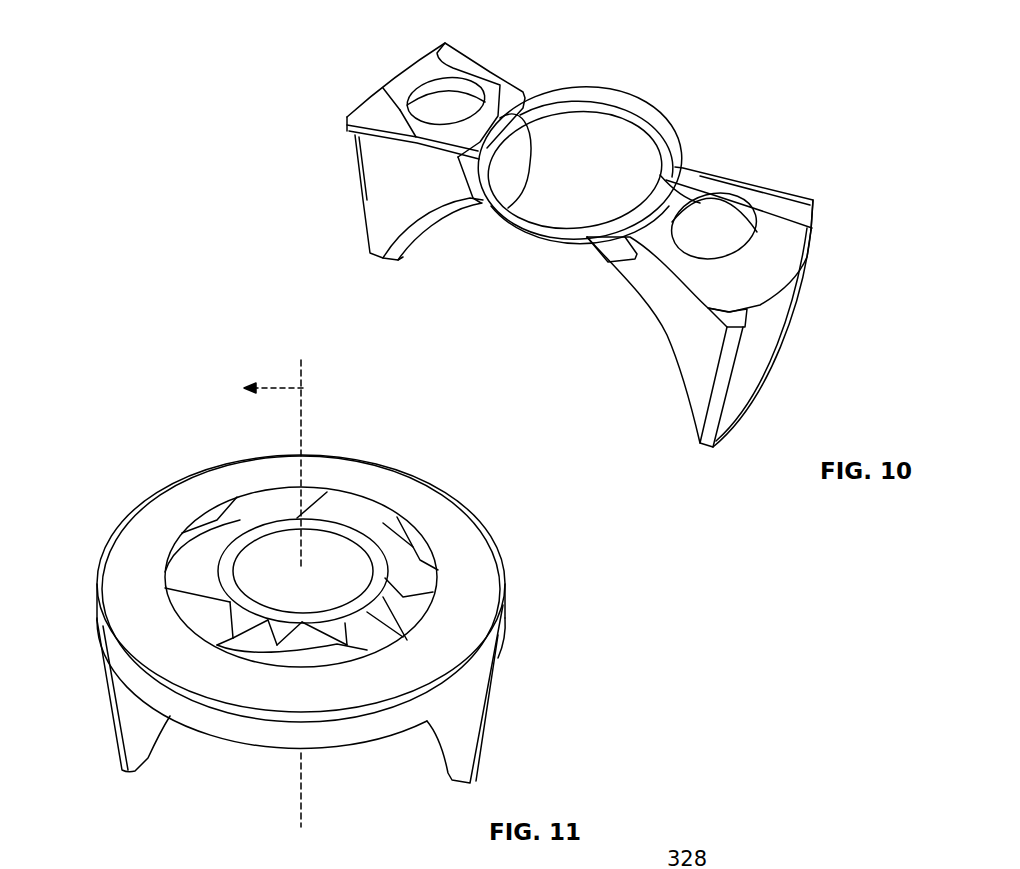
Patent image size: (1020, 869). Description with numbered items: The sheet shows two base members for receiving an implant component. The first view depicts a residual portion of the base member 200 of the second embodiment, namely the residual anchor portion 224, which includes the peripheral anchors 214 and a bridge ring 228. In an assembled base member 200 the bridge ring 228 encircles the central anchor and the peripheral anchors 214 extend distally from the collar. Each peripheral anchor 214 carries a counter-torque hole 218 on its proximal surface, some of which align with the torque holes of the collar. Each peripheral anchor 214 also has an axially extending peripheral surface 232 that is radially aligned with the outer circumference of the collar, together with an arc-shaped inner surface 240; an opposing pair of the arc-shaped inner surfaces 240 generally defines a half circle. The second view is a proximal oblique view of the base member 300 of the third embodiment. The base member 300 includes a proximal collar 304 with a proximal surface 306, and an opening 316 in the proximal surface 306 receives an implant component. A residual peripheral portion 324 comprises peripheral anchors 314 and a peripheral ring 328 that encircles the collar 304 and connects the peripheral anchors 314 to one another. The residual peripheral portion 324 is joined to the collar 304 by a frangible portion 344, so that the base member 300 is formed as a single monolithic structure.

In FIG. 10, the base member 200 is at (373, 42).
In FIG. 10, the peripheral anchors 214 is at (355, 203).
In FIG. 10, the counter-torque hole 218 is at (720, 207).
In FIG. 10, the residual anchor portion 224 is at (805, 258).
In FIG. 10, the bridge ring 228 is at (652, 118).
In FIG. 10, the axially extending peripheral surface 232 is at (770, 342).
In FIG. 10, the arc-shaped inner surface 240 is at (427, 223).
In FIG. 11, the base member 300 is at (96, 365).
In FIG. 11, the proximal collar 304 is at (227, 540).
In FIG. 11, the proximal surface 306 is at (250, 518).
In FIG. 11, the peripheral anchors 314 is at (486, 737).
In FIG. 11, the opening 316 is at (342, 533).
In FIG. 11, the residual peripheral portion 324 is at (502, 640).
In FIG. 11, the peripheral ring 328 is at (484, 580).
In FIG. 11, the frangible portion 344 is at (188, 567).